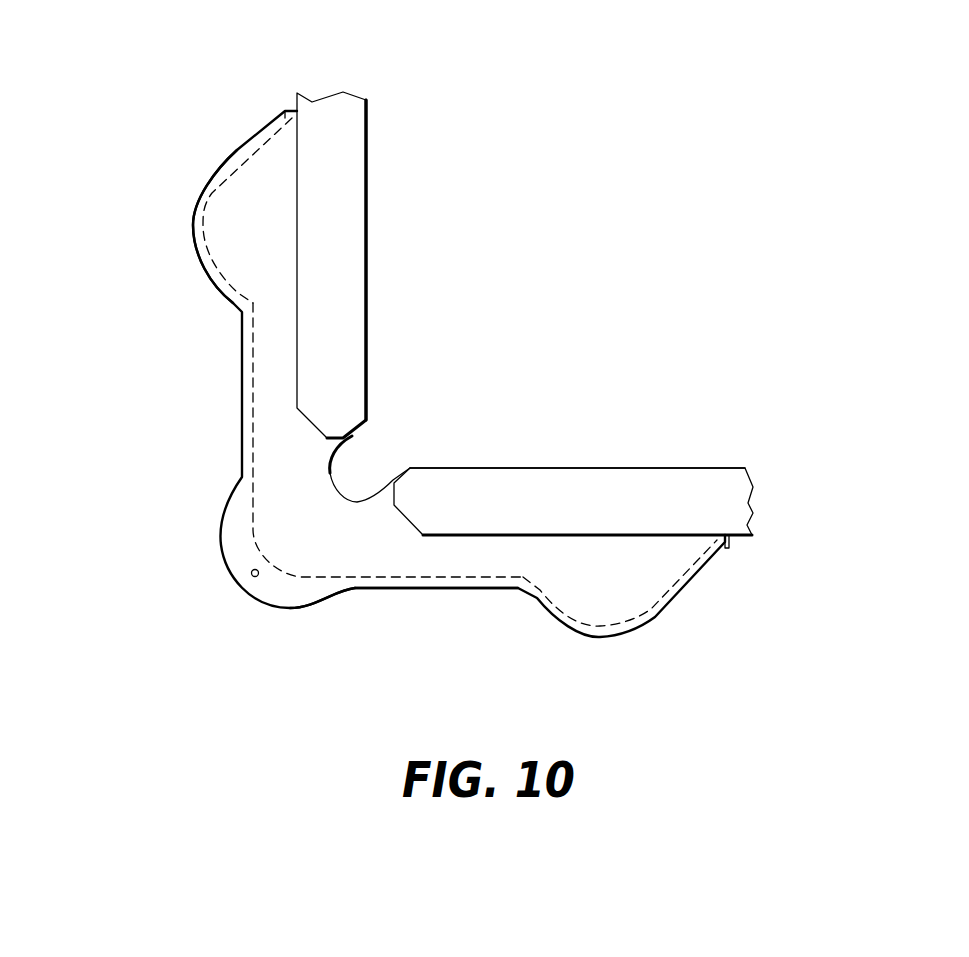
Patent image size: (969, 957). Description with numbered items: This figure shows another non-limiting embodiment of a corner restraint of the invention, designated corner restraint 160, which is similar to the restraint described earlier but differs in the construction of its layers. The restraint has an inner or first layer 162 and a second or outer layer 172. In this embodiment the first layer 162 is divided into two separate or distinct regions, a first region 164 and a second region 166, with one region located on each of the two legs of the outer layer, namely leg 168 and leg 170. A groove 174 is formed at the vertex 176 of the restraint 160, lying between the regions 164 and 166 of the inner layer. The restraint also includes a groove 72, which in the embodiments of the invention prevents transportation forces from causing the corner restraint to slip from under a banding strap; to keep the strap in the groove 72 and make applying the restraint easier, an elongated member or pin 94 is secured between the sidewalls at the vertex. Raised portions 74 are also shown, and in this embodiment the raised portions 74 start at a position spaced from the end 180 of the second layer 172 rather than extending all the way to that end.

The corner restraint 160 is at (162, 317).
The inner or first layer 162 is at (382, 227).
The first region of inner layer 164 is at (366, 322).
The second region of inner layer 166 is at (597, 467).
The leg of second layer 168 is at (228, 143).
The leg of second layer 170 is at (422, 602).
The second or outer layer 172 is at (378, 602).
The groove 174 is at (378, 455).
The vertex 176 is at (352, 476).
The end of second layer 180 is at (285, 110).
The groove 72 is at (253, 481).
The raised portions 74 is at (203, 233).
The elongated member or pin 94 is at (257, 580).